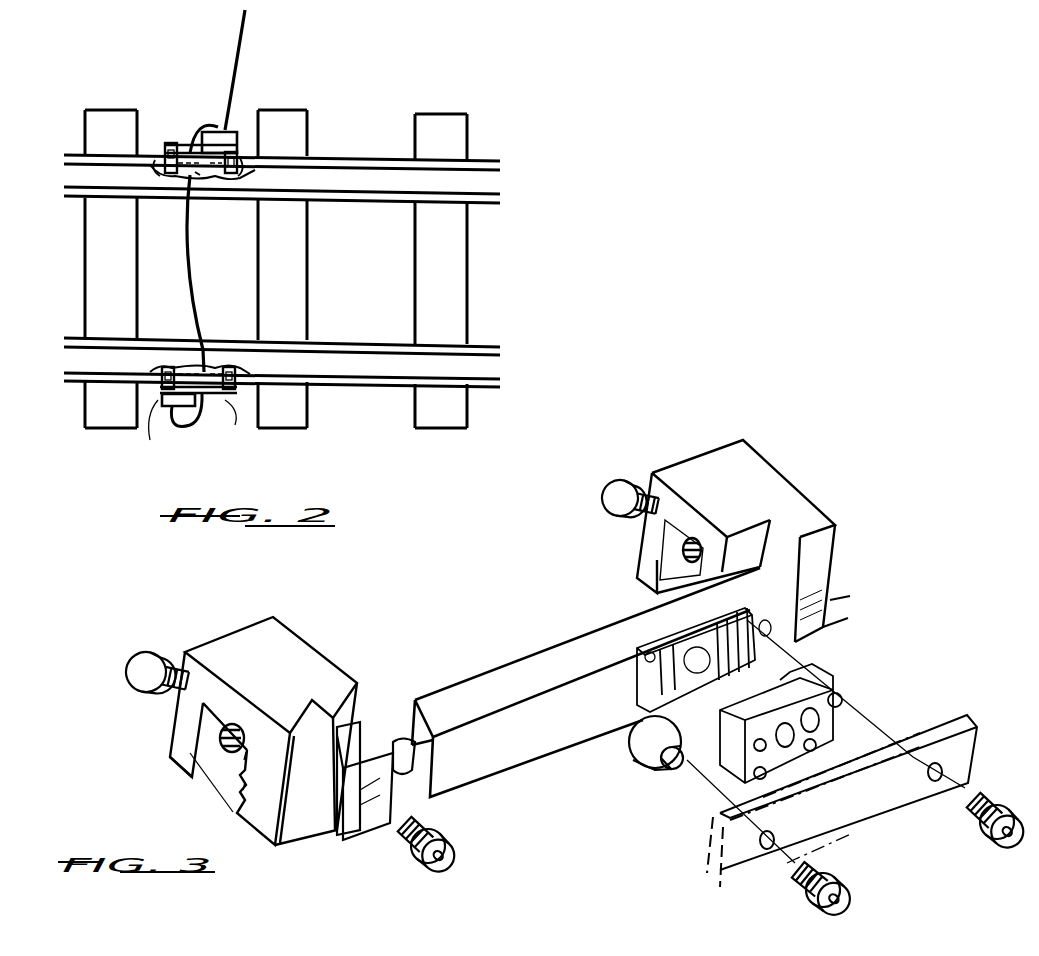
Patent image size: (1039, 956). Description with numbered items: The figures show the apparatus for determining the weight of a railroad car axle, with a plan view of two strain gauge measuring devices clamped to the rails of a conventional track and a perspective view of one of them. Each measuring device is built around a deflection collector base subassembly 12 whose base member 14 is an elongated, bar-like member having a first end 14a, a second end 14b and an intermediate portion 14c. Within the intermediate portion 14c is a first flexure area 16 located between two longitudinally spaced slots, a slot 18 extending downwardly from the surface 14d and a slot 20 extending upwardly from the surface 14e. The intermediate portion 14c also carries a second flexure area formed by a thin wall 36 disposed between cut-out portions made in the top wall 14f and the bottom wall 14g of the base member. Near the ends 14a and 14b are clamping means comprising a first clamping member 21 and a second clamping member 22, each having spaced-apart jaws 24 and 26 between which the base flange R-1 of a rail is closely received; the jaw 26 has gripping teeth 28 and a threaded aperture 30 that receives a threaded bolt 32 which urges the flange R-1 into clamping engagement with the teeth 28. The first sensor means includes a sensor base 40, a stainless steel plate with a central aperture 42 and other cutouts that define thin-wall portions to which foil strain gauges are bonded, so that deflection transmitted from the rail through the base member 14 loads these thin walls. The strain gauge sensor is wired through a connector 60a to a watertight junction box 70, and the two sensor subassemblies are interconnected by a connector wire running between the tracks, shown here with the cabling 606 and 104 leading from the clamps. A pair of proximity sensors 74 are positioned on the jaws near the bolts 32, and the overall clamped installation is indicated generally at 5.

In FIG. 2, the clamp assembly 5 is at (198, 176).
In FIG. 2, the deflection collector base subassembly 12 is at (225, 132).
In FIG. 3, the deflection collector base subassembly 12 is at (865, 590).
In FIG. 2, the base member 14 is at (201, 154).
In FIG. 3, the base member 14 is at (525, 660).
In FIG. 3, the first end 14a is at (345, 835).
In FIG. 3, the second end 14b is at (835, 618).
In FIG. 3, the intermediate portion 14c is at (540, 620).
In FIG. 3, the surface 14d is at (490, 690).
In FIG. 3, the surface 14e is at (485, 780).
In FIG. 3, the top wall 14f is at (560, 740).
In FIG. 3, the bottom wall 14g is at (500, 660).
In FIG. 3, the first flexure area 16 is at (700, 650).
In FIG. 3, the slot 18 is at (648, 655).
In FIG. 3, the slot 20 is at (730, 660).
In FIG. 3, the first clamping member 21 is at (258, 640).
In FIG. 3, the second clamping member 22 is at (752, 468).
In FIG. 3, the first jaw 24 is at (172, 750).
In FIG. 3, the second jaw 26 is at (815, 500).
In FIG. 3, the gripping protuberances or teeth 28 is at (237, 780).
In FIG. 3, the threaded aperture 30 is at (200, 700).
In FIG. 2, the threaded bolt 32 is at (166, 152).
In FIG. 3, the threaded bolt 32 is at (140, 668).
In FIG. 3, the thin wall 36 is at (398, 735).
In FIG. 3, the sensor base 40 is at (855, 710).
In FIG. 3, the central aperture 42 is at (835, 785).
In FIG. 3, the connector 60a is at (658, 790).
In FIG. 2, the cable 606 is at (192, 266).
In FIG. 2, the junction box or housing 70 is at (235, 146).
In FIG. 2, the proximity sensor 74 is at (240, 170).
In FIG. 2, the cable 104 is at (245, 40).
In FIG. 2, the base flange R-1 is at (203, 125).